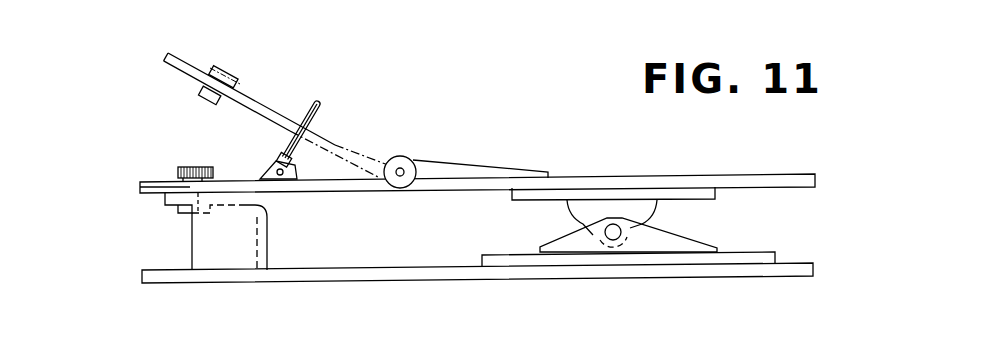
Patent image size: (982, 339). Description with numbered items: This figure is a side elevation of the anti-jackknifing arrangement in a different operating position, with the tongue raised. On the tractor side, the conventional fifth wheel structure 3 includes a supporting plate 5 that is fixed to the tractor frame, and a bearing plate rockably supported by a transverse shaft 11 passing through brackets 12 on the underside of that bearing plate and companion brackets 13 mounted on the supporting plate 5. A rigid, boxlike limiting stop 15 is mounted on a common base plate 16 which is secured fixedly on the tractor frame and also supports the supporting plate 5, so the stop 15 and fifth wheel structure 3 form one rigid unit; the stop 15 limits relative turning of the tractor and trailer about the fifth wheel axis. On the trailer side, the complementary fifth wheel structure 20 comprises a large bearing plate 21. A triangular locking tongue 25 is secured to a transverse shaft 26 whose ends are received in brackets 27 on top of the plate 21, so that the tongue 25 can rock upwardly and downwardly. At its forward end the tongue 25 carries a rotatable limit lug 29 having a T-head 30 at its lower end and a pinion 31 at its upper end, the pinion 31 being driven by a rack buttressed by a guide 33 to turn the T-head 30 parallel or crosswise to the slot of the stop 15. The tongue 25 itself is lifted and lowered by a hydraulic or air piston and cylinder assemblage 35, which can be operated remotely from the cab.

The fifth wheel structure 3 is at (695, 213).
The supporting plate 5 is at (767, 256).
The transverse shaft 11 is at (619, 236).
The brackets 12 is at (595, 210).
The companion brackets 13 is at (580, 238).
The limiting stop 15 is at (260, 227).
The base plate 16 is at (155, 277).
The complementary fifth wheel structure 20 is at (813, 172).
The bearing plate 21 is at (707, 181).
The locking tongue 25 is at (165, 52).
The transverse shaft 26 is at (404, 168).
The brackets 27 is at (470, 172).
The limit lug 29 is at (138, 185).
The T-head 30 is at (178, 210).
The pinion 31 is at (193, 167).
The guide 33 is at (213, 166).
The piston and cylinder assemblage 35 is at (322, 108).